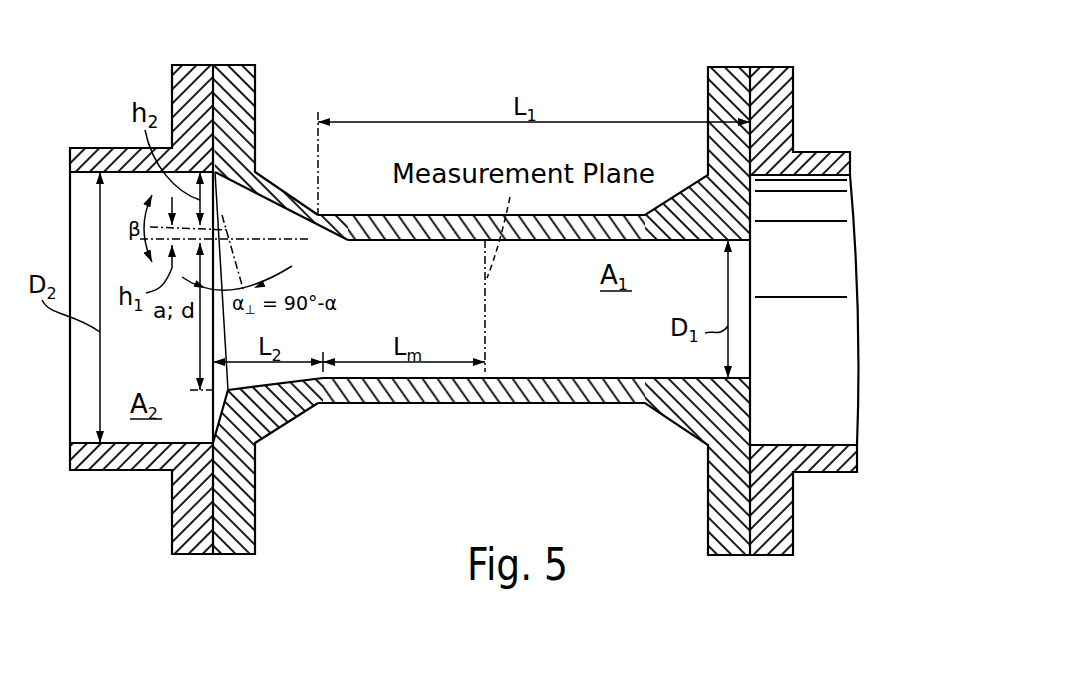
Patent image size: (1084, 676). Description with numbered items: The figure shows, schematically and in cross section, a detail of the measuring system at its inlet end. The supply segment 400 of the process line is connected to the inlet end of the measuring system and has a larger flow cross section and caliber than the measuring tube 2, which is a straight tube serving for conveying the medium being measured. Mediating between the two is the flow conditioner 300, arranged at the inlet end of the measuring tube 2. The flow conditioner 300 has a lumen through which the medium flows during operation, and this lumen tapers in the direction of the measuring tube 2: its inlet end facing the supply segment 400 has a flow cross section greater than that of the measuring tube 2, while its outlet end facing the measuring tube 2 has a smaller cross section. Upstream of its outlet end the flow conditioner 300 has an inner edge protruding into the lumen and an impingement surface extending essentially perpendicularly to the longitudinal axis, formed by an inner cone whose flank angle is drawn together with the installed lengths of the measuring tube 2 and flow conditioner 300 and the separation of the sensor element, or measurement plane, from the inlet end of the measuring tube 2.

The measuring tube 2 is at (430, 390).
The flow conditioner 300 is at (278, 405).
The supply segment 400 is at (118, 460).